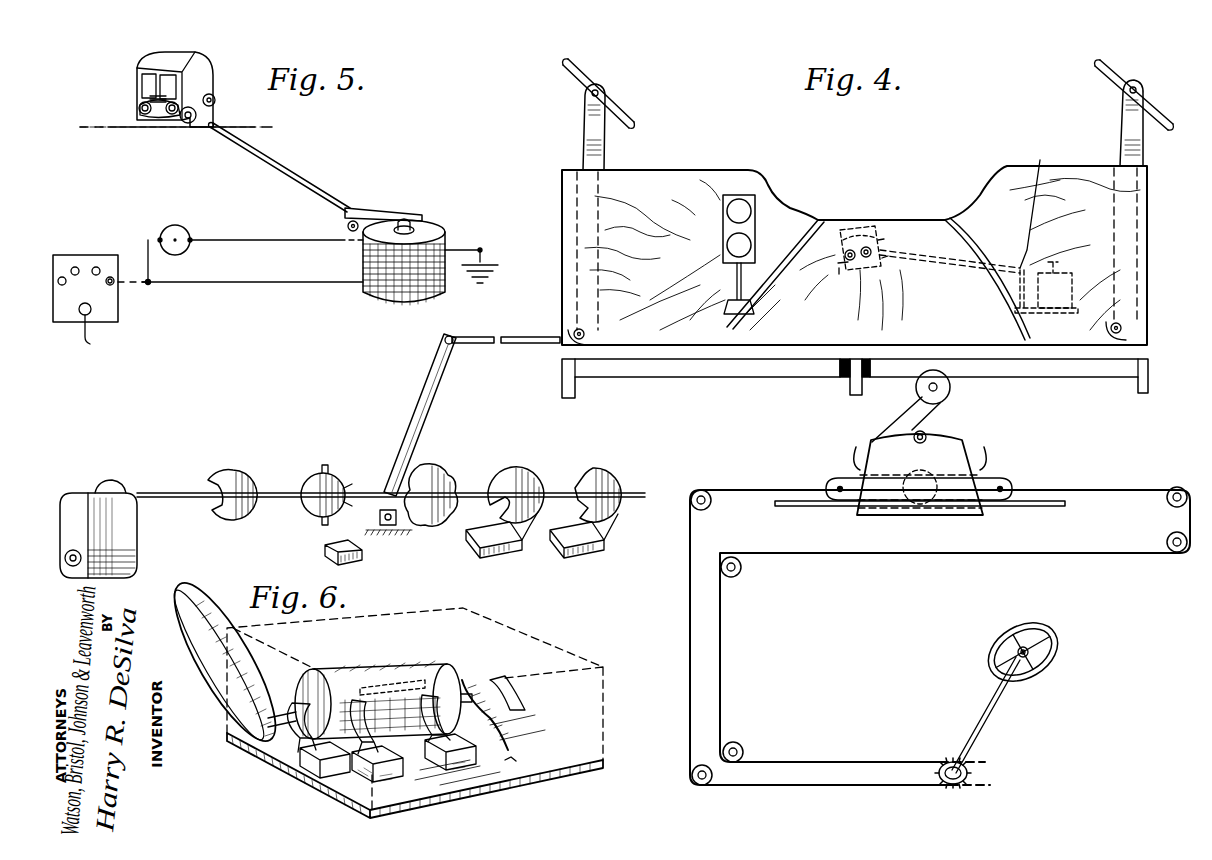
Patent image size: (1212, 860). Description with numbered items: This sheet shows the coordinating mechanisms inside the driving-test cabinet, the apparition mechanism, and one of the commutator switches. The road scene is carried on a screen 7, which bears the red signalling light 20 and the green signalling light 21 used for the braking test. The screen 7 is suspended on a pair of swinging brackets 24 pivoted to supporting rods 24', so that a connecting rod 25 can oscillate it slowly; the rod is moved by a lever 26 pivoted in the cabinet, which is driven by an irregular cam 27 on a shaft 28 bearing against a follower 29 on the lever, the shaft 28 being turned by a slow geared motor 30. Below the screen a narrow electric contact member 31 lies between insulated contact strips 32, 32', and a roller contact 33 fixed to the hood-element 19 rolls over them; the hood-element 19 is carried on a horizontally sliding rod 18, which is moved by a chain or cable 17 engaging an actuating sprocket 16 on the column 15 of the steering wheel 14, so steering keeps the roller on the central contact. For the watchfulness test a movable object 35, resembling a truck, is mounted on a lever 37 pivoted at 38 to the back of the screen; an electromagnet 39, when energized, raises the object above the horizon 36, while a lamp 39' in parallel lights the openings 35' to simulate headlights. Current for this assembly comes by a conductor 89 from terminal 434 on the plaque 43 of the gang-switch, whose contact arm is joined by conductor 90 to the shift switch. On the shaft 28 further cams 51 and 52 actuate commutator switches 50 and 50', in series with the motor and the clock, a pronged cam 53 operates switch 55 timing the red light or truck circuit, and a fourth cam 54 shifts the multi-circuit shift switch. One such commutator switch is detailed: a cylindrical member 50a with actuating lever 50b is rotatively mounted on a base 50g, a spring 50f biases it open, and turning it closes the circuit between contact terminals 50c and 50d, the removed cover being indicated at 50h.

In FIG. 4, the screen 7 is at (695, 170).
In FIG. 4, the steering wheel 14 is at (1048, 645).
In FIG. 4, the column 15 is at (992, 708).
In FIG. 4, the actuating sprocket 16 is at (968, 770).
In FIG. 4, the chain or cable 17 is at (1130, 490).
In FIG. 4, the horizontally sliding rod 18 is at (1003, 478).
In FIG. 4, the hood-element 19 is at (955, 455).
In FIG. 4, the red signalling light 20 is at (742, 210).
In FIG. 4, the green signalling light 21 is at (757, 232).
In FIG. 4, the swinging brackets 24 is at (841, 125).
In FIG. 4, the supporting rods 24' is at (868, 82).
In FIG. 5, the connecting rod 25 is at (512, 337).
In FIG. 5, the lever 26 is at (424, 368).
In FIG. 5, the irregular cam 27 is at (450, 468).
In FIG. 5, the shaft 28 is at (165, 490).
In FIG. 5, the follower 29 is at (392, 500).
In FIG. 5, the geared motor 30 is at (120, 492).
In FIG. 4, the electric contact member 31 is at (848, 392).
In FIG. 4, the contact strip 32 is at (701, 384).
In FIG. 4, the contact strip 32' is at (1009, 384).
In FIG. 4, the roller contact 33 is at (952, 392).
In FIG. 5, the movable object 35 is at (150, 89).
In FIG. 4, the movable object 35 is at (871, 226).
In FIG. 5, the openings 35' is at (162, 131).
In FIG. 5, the horizon 36 is at (226, 127).
In FIG. 4, the horizon 36 is at (920, 220).
In FIG. 5, the lever 37 is at (303, 183).
In FIG. 4, the lever 37 is at (930, 282).
In FIG. 5, the pivot 38 is at (346, 226).
In FIG. 4, the pivot 38 is at (1040, 162).
In FIG. 5, the electromagnet 39 is at (322, 246).
In FIG. 4, the electromagnet 39 is at (1095, 287).
In FIG. 5, the electric lamp 39' is at (191, 226).
In FIG. 5, the plaque 43 is at (146, 320).
In FIG. 5, the terminal 434 is at (110, 278).
In FIG. 5, the conductor 89 is at (140, 284).
In FIG. 5, the conductor 90 is at (90, 342).
In FIG. 5, the commutator switch 50 is at (505, 543).
In FIG. 5, the commutator switch 50' is at (592, 541).
In FIG. 6, the cylindrical member 50a is at (388, 662).
In FIG. 6, the actuating lever 50b is at (195, 600).
In FIG. 6, the contact terminal 50c is at (358, 700).
In FIG. 6, the contact terminal 50d is at (440, 690).
In FIG. 6, the spring 50f is at (510, 712).
In FIG. 6, the base 50g is at (545, 738).
In FIG. 6, the cover 50h is at (603, 682).
In FIG. 5, the cam 51 is at (520, 468).
In FIG. 5, the cam 52 is at (603, 468).
In FIG. 5, the cam 53 is at (323, 472).
In FIG. 5, the fourth cam 54 is at (240, 470).
In FIG. 5, the commutator switch 55 is at (366, 556).